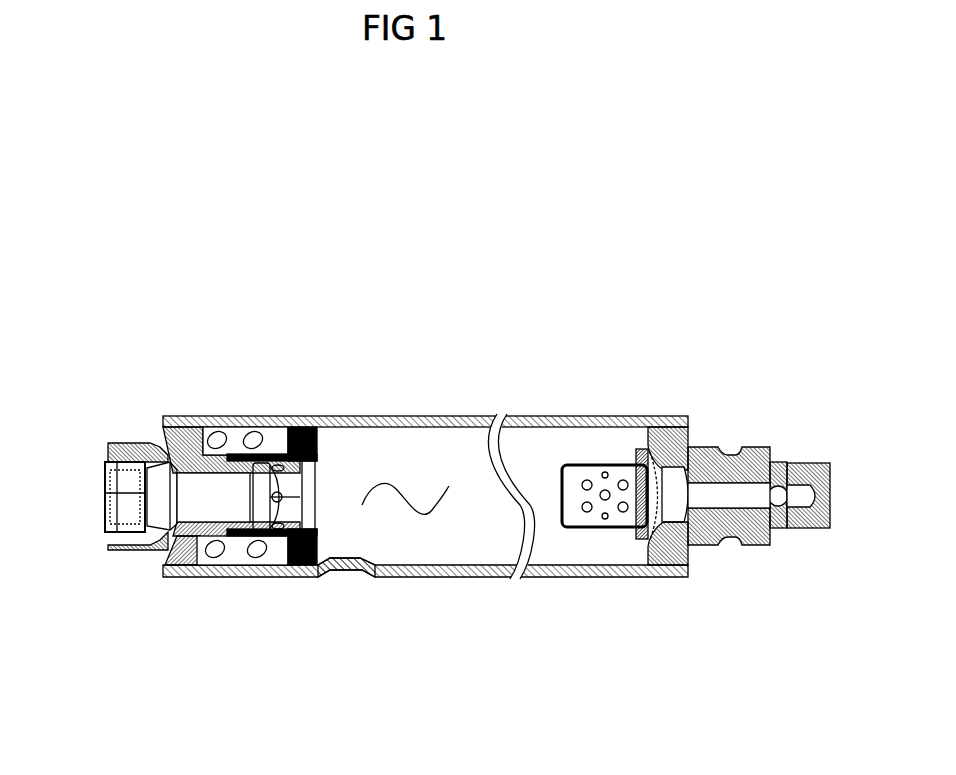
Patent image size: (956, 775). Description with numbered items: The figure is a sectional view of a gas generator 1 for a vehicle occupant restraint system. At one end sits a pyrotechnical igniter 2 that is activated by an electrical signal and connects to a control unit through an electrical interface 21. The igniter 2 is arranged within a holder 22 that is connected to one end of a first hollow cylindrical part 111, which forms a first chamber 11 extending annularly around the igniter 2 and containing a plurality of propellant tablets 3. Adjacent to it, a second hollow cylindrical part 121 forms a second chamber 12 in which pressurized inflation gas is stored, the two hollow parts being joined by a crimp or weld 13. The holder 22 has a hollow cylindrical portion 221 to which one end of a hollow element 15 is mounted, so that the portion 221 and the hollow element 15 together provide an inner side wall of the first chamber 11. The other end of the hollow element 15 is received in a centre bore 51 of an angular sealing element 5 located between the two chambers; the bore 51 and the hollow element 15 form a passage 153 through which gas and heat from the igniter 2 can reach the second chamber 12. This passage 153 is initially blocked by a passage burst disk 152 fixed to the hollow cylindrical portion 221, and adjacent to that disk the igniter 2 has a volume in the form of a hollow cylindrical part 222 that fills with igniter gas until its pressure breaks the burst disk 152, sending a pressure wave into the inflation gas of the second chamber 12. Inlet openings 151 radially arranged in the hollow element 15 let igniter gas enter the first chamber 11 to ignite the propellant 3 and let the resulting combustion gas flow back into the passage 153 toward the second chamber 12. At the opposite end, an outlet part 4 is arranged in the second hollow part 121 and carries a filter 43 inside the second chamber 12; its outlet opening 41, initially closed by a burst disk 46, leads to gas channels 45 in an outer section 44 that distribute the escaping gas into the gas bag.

The gas generator 1 is at (108, 406).
The pyrotechnical igniter 2 is at (178, 560).
The propellant tablets 3 is at (214, 436).
The outlet part 4 is at (757, 452).
The angular sealing element 5 is at (304, 426).
The first chamber 11 is at (202, 562).
The second chamber 12 is at (593, 566).
The crimp or weld 13 is at (347, 576).
The hollow element 15 is at (298, 566).
The electrical interface 21 is at (108, 522).
The holder 22 is at (180, 428).
The outlet opening 41 is at (683, 560).
The filter 43 is at (584, 483).
The outer section 44 is at (814, 530).
The gas channels 45 is at (781, 468).
The burst disk 46 is at (683, 420).
The centre bore 51 is at (320, 466).
The first hollow cylindrical part 111 is at (318, 566).
The second hollow cylindrical part 121 is at (589, 417).
The inlet openings 151 is at (284, 498).
The passage burst disk 152 is at (263, 436).
The passage 153 is at (313, 486).
The hollow cylindrical portion 221 is at (237, 454).
The hollow cylindrical part 222 is at (222, 538).